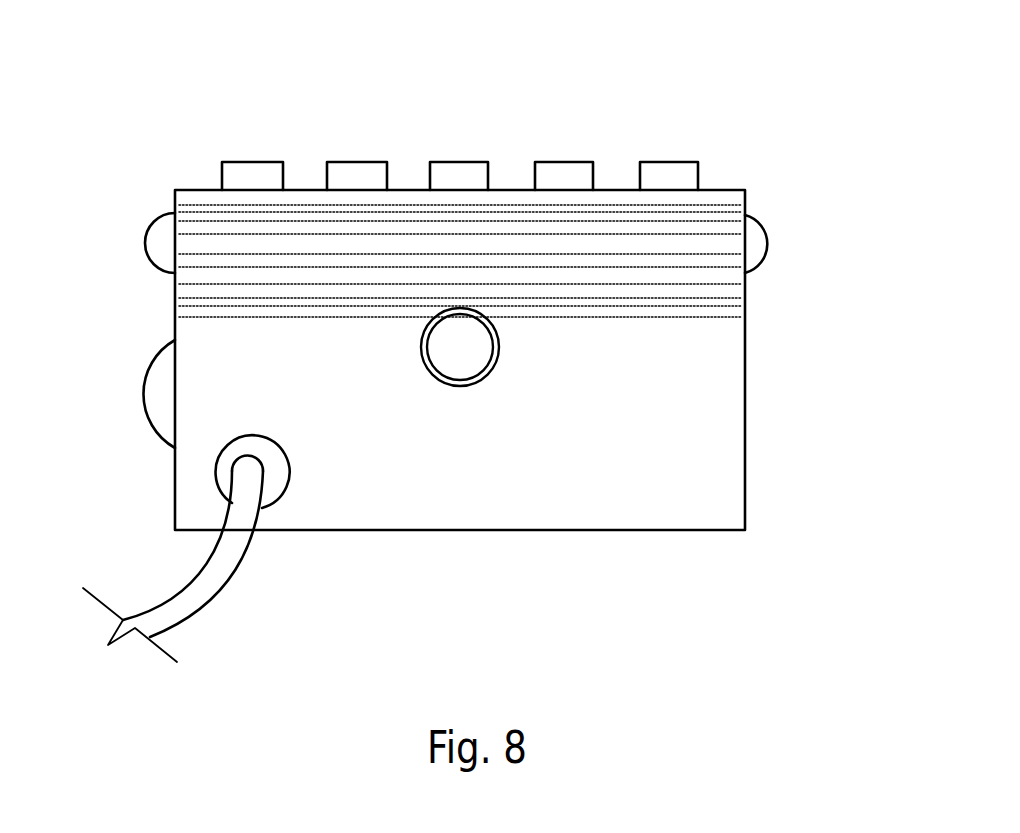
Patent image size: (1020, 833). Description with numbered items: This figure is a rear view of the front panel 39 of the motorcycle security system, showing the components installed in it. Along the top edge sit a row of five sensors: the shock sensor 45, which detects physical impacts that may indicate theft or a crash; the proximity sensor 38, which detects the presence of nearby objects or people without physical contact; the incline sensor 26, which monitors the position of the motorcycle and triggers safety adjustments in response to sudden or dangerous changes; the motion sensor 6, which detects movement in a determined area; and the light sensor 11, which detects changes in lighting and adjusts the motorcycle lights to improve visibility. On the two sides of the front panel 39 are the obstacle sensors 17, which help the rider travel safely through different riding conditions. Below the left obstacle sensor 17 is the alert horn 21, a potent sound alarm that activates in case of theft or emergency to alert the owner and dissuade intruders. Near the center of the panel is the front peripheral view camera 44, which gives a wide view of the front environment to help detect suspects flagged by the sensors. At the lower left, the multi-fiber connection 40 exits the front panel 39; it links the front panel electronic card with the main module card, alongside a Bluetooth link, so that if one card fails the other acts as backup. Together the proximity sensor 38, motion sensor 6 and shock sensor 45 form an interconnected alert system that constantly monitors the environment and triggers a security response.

The motion sensor 6 is at (565, 162).
The light sensor 11 is at (672, 162).
The obstacle sensor 17 is at (148, 232).
The alert horn 21 is at (145, 388).
The incline sensor 26 is at (460, 162).
The proximity sensor 38 is at (357, 162).
The front panel 39 is at (692, 483).
The multi-fiber connection 40 is at (232, 570).
The front peripheral view camera 44 is at (473, 345).
The shock sensor 45 is at (252, 162).